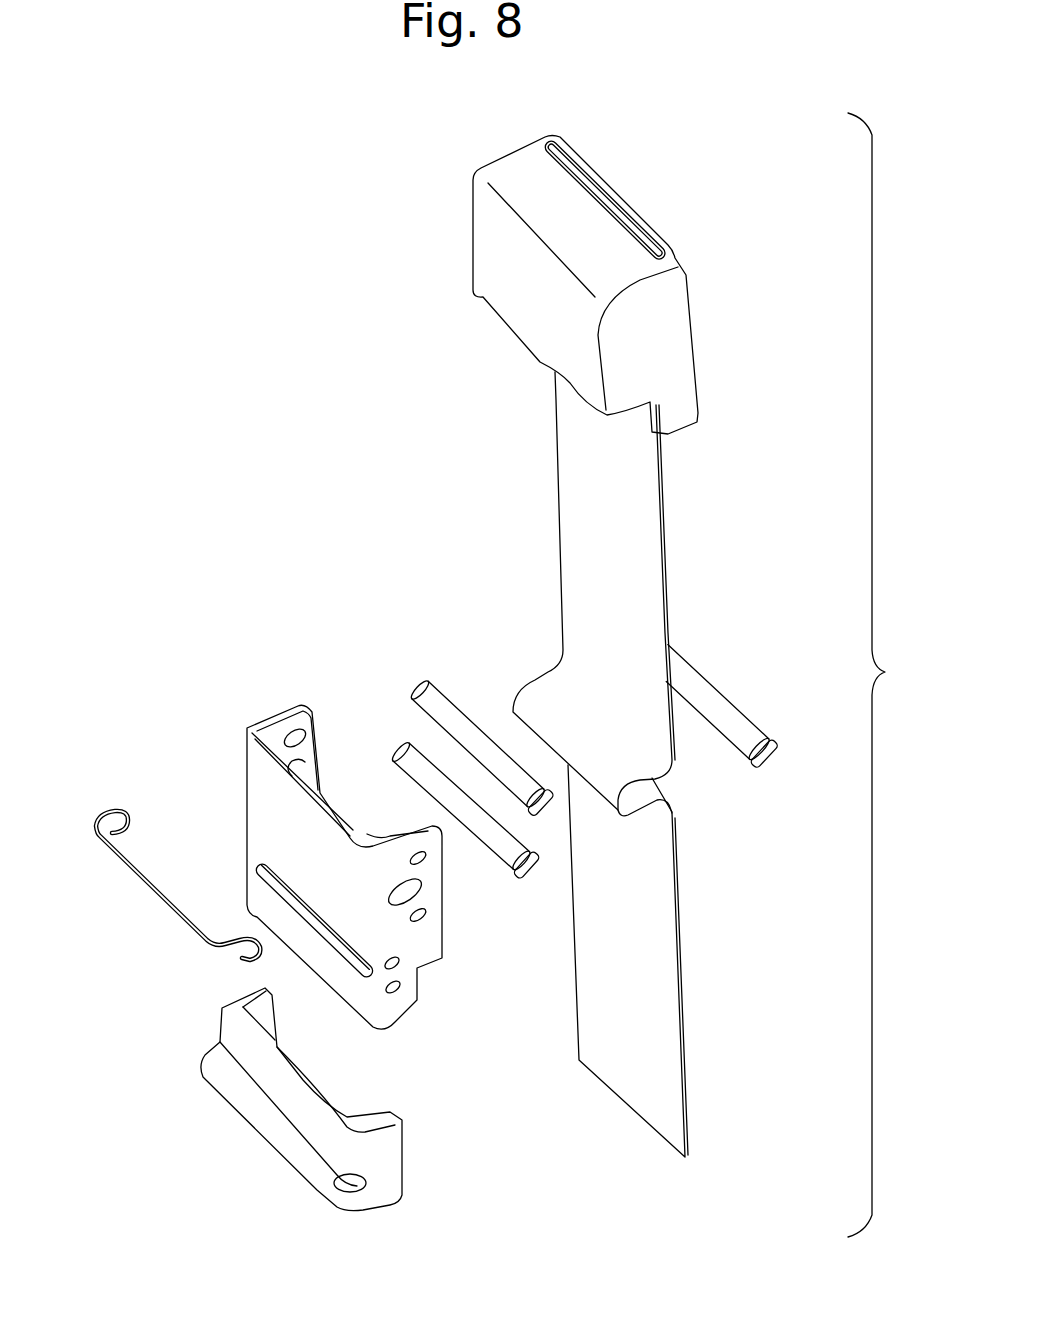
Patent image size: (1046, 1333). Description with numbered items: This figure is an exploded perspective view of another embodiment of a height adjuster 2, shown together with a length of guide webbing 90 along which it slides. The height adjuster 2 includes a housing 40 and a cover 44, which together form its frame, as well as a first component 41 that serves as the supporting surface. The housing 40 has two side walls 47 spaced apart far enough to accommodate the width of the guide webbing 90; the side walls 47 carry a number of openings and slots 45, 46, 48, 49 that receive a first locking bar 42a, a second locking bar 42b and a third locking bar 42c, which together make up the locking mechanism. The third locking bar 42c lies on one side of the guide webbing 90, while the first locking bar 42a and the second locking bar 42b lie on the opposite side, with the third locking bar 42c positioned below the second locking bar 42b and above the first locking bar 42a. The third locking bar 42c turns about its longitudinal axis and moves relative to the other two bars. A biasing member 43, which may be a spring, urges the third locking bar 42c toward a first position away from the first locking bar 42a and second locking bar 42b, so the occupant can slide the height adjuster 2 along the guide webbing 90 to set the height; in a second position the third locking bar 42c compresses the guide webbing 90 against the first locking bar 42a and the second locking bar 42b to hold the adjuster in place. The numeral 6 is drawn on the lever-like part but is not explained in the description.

The height adjuster 2 is at (879, 675).
The latch lever 6 is at (556, 483).
The housing 40 is at (232, 714).
The first component 41 is at (235, 1120).
The first locking bar 42a is at (398, 787).
The second locking bar 42b is at (468, 686).
The third locking bar 42c is at (772, 706).
The biasing member 43 is at (147, 887).
The cover 44 is at (462, 162).
The opening/slot 45 is at (427, 862).
The opening/slot 46 is at (430, 895).
The side wall 47 is at (423, 948).
The opening/slot 48 is at (397, 987).
The opening/slot 49 is at (432, 918).
The guide webbing 90 is at (680, 975).